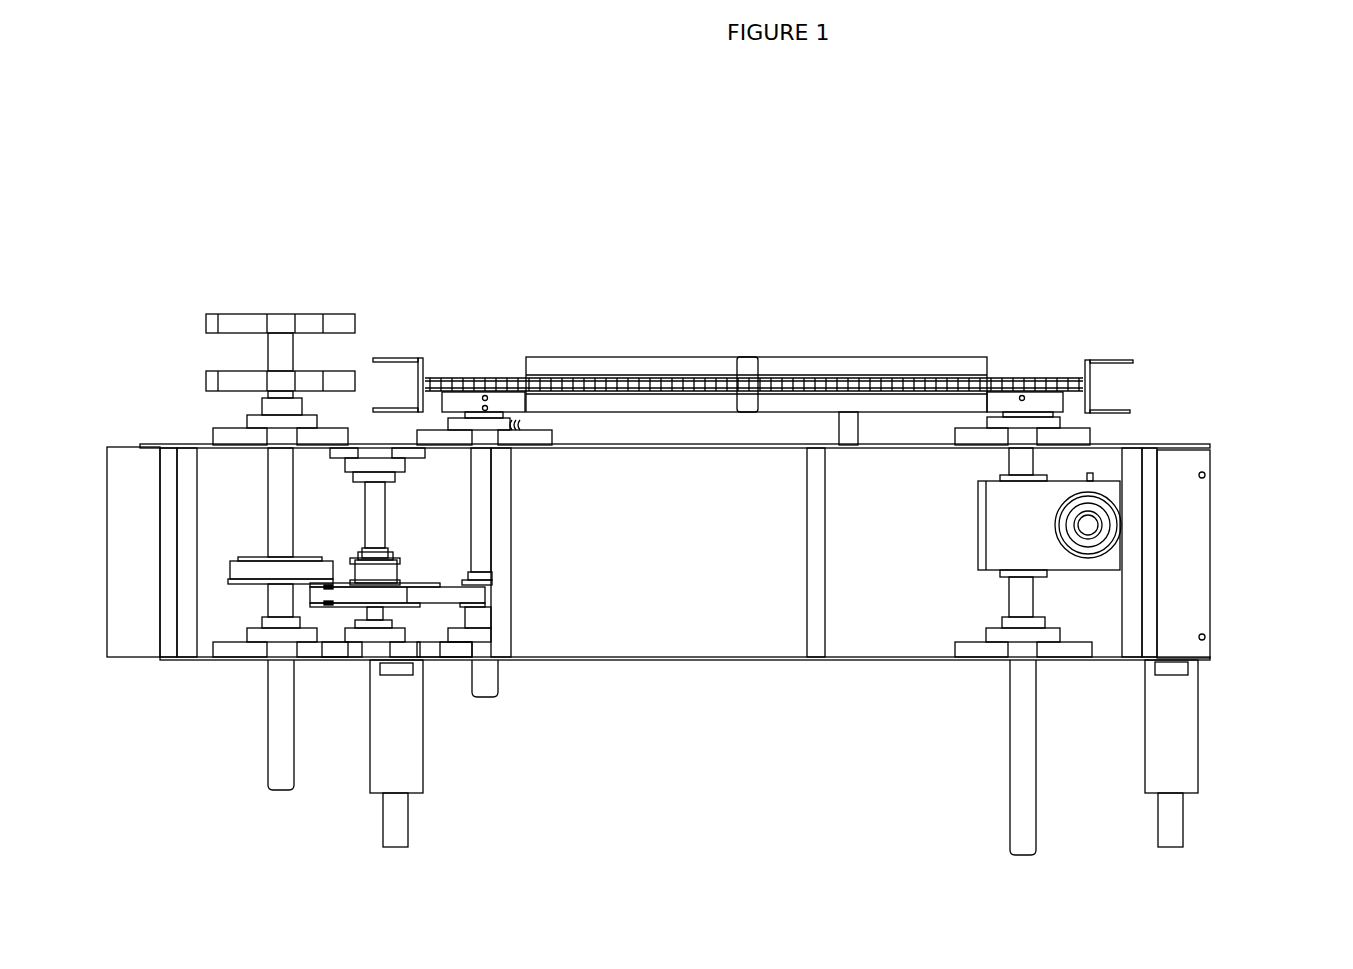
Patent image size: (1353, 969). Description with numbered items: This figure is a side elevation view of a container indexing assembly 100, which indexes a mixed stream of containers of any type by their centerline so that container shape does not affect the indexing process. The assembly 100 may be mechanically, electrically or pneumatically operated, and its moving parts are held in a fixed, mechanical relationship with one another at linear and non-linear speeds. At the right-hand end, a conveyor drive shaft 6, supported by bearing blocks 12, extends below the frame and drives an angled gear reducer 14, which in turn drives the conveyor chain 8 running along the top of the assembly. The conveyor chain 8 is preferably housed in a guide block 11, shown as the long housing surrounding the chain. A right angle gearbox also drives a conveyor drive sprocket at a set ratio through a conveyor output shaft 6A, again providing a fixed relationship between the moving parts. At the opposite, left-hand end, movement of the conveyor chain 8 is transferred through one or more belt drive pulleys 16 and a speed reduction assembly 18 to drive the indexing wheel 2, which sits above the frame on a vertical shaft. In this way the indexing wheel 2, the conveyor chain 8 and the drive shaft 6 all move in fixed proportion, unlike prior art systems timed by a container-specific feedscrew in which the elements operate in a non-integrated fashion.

The container indexing assembly 100 is at (828, 287).
The indexing wheel 2 is at (252, 312).
The guide block 11 is at (693, 357).
The conveyor chain 8 is at (1022, 375).
The angled gear reducer 14 is at (1083, 525).
The conveyor output shaft 6A is at (1088, 525).
The belt drive pulleys 16 is at (479, 595).
The speed reduction assembly 18 is at (370, 597).
The bearing blocks 12 is at (980, 645).
The conveyor drive shaft 6 is at (1038, 858).